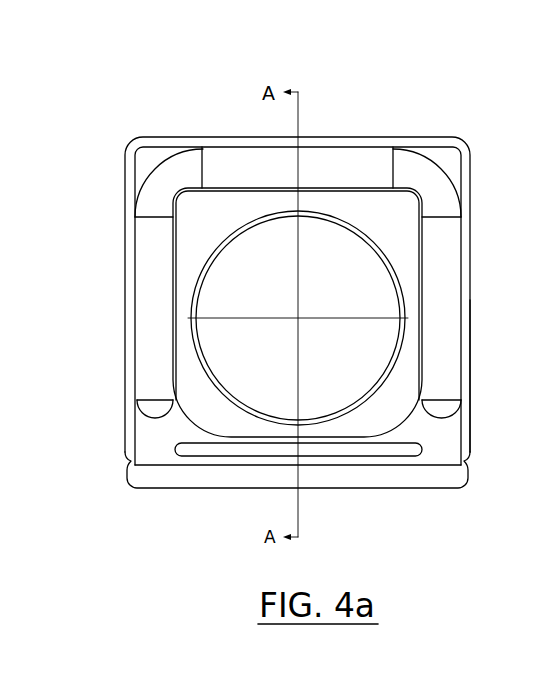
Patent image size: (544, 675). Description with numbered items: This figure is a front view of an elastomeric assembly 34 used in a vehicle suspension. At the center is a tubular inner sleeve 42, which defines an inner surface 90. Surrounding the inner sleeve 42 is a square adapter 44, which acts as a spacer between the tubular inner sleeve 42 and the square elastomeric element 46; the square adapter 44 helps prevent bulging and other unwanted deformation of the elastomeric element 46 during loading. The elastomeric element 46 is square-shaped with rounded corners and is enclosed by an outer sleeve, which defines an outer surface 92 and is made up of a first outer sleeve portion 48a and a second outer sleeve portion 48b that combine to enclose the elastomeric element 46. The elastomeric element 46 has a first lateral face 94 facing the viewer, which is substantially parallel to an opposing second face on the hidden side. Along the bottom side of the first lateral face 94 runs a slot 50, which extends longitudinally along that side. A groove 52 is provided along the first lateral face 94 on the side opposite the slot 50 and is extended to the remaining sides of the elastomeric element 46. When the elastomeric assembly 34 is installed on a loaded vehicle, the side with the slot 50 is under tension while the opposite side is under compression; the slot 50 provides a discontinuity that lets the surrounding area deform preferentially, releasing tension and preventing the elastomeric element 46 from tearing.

The elastomeric assembly 34 is at (380, 98).
The inner sleeve 42 is at (372, 240).
The square adapter 44 is at (415, 288).
The elastomeric element 46 is at (452, 365).
The first outer sleeve portion 48a is at (468, 412).
The second outer sleeve portion 48b is at (400, 477).
The slot 50 is at (232, 450).
The groove 52 is at (158, 306).
The inner surface 90 is at (227, 255).
The outer surface 92 is at (188, 129).
The first lateral face 94 is at (163, 432).